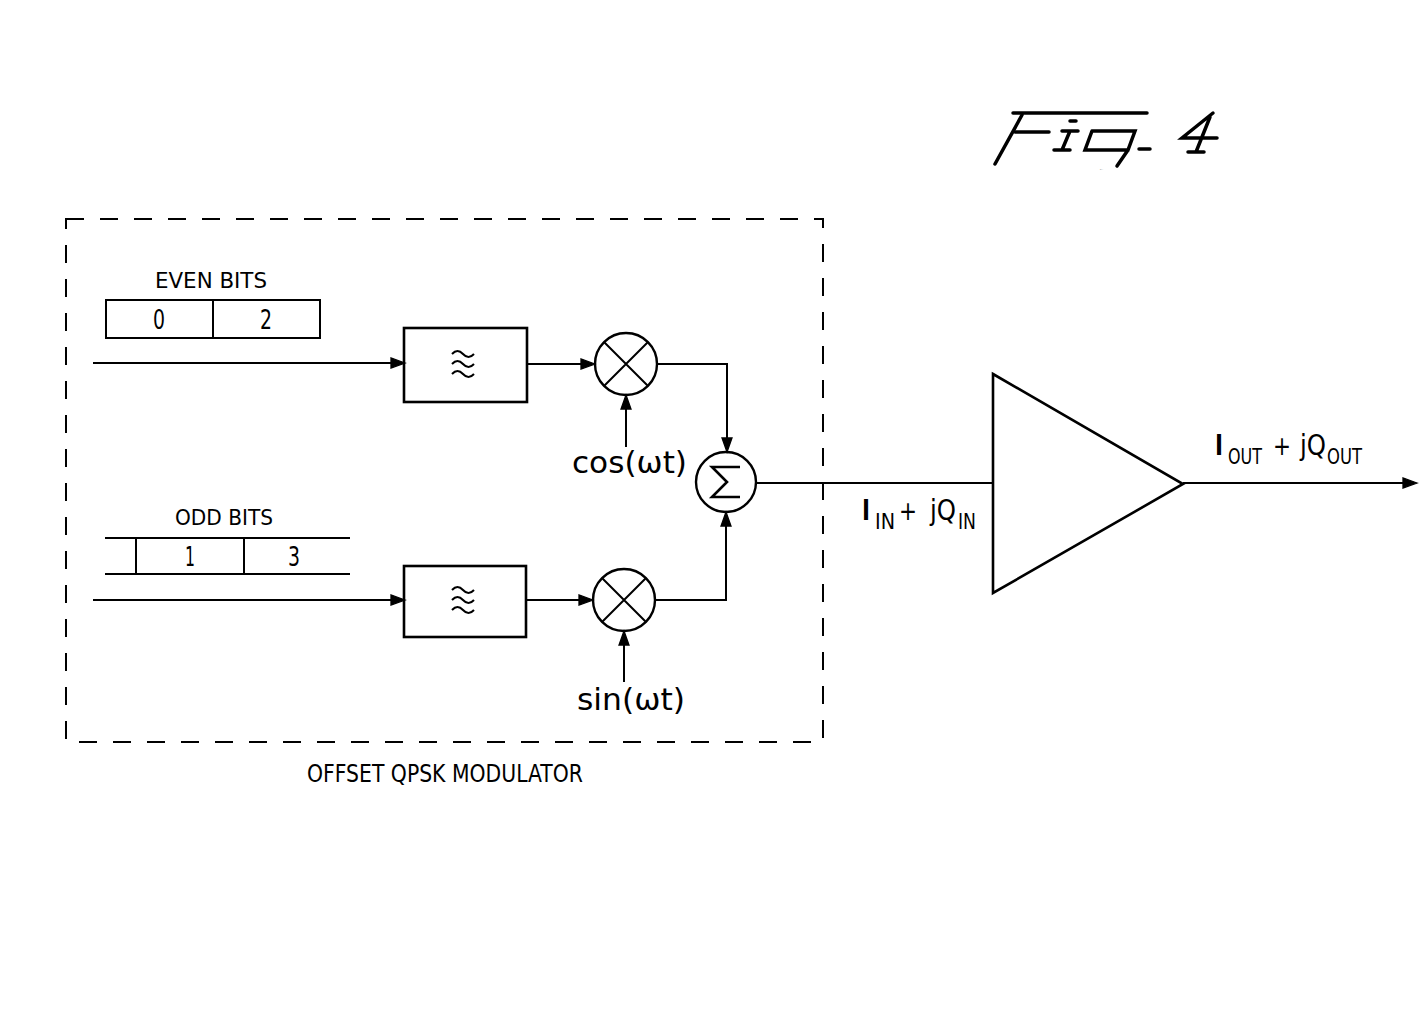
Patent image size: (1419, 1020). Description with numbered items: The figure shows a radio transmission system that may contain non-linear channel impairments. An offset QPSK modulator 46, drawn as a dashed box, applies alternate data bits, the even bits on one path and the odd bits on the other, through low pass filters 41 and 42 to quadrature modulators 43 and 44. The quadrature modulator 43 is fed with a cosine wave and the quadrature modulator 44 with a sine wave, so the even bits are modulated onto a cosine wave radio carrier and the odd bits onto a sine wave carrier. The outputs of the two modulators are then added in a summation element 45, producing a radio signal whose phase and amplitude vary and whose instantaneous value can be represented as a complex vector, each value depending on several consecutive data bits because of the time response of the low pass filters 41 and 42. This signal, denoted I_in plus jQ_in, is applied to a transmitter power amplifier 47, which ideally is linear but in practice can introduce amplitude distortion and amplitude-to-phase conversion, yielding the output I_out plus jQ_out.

The low pass filter 41 is at (463, 402).
The low pass filter 42 is at (462, 637).
The quadrature modulator 43 is at (626, 333).
The quadrature modulator 44 is at (623, 569).
The summation element 45 is at (748, 461).
The offset QPSK modulator 46 is at (676, 218).
The transmitter power amplifier 47 is at (1081, 423).